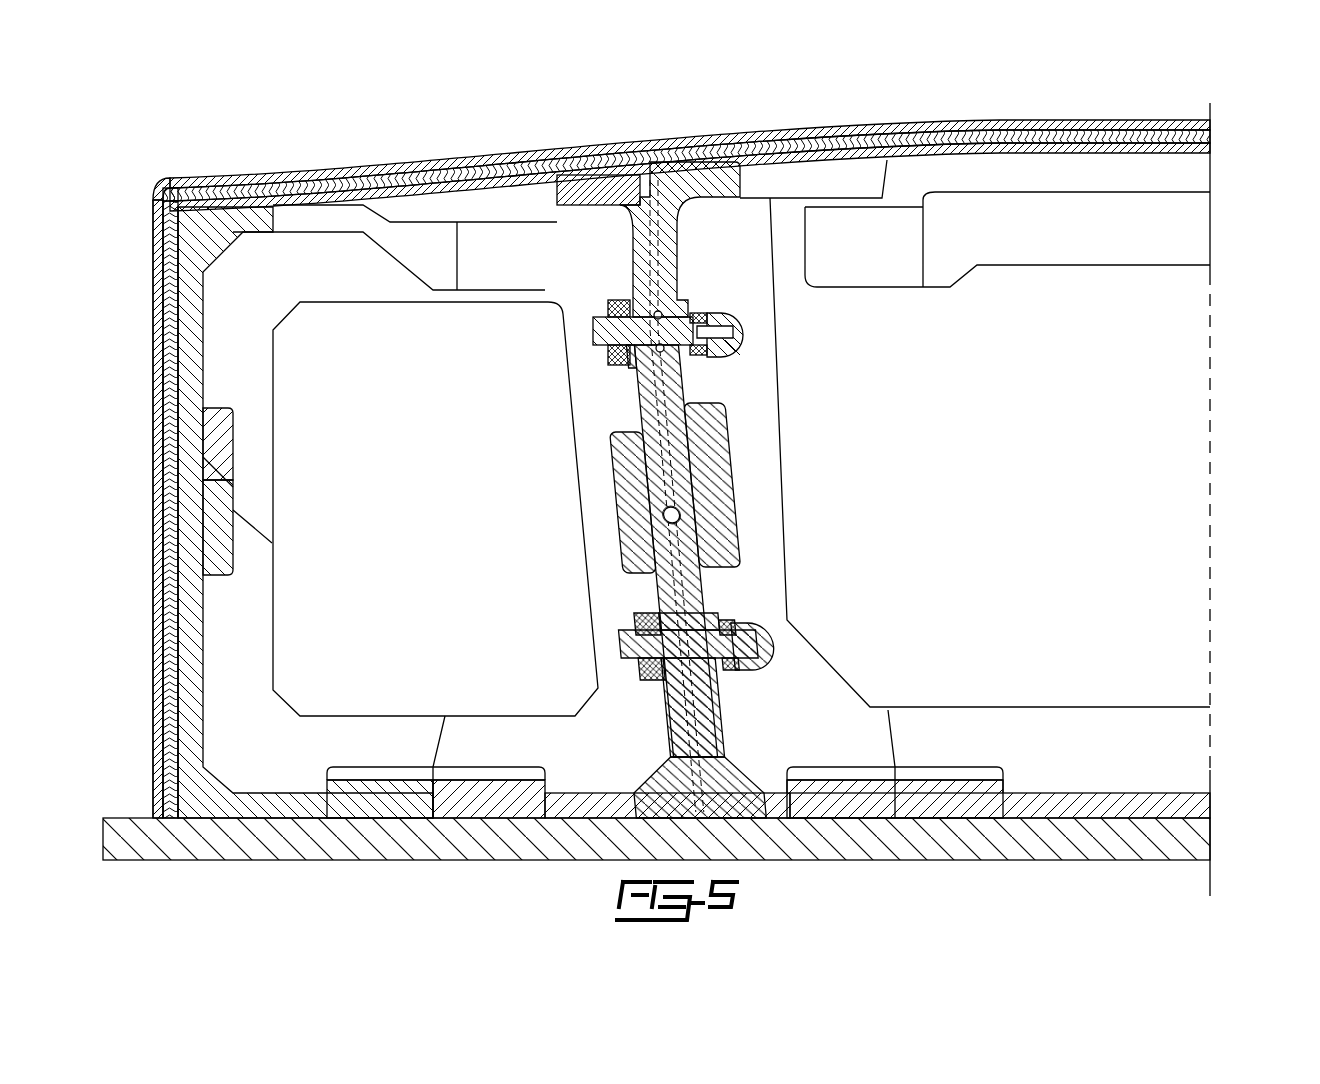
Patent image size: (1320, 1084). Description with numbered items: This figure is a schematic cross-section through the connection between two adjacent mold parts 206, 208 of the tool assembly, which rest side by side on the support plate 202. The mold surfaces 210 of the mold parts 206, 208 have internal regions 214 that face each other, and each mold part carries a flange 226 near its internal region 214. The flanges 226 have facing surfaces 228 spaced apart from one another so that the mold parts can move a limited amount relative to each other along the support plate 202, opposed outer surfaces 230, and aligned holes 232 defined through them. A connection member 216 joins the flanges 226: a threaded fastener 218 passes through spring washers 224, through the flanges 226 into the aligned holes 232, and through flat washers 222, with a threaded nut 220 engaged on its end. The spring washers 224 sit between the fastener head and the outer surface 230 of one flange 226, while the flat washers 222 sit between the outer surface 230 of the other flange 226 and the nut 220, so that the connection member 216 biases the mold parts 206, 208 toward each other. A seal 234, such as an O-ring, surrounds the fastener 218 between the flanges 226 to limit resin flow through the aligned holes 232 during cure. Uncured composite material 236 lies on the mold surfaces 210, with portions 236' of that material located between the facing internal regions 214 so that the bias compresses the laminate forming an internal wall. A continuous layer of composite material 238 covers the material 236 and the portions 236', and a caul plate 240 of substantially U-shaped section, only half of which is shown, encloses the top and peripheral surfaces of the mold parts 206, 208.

The support plate 202 is at (1148, 845).
The mold part 206 is at (477, 260).
The mold part 208 is at (1164, 303).
The mold surface 210 is at (717, 459).
The internal region 214 is at (645, 252).
The connection member 216 is at (705, 355).
The threaded fastener 218 is at (738, 356).
The threaded nut 220 is at (722, 320).
The flat washer 222 is at (752, 336).
The spring washer 224 is at (600, 327).
The flange 226 is at (694, 552).
The facing surface 228 is at (676, 517).
The outer surface 230 is at (655, 388).
The aligned hole 232 is at (606, 348).
The seal 234 is at (618, 355).
The uncured composite material 236 is at (690, 220).
The portion of uncured material 236' is at (595, 502).
The continuous layer of composite material 238 is at (1167, 140).
The caul plate 240 is at (1172, 128).